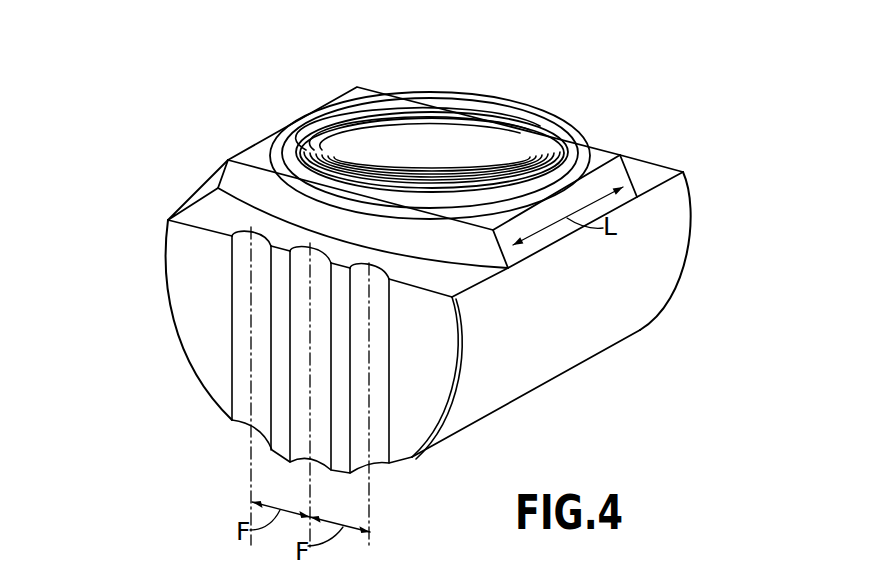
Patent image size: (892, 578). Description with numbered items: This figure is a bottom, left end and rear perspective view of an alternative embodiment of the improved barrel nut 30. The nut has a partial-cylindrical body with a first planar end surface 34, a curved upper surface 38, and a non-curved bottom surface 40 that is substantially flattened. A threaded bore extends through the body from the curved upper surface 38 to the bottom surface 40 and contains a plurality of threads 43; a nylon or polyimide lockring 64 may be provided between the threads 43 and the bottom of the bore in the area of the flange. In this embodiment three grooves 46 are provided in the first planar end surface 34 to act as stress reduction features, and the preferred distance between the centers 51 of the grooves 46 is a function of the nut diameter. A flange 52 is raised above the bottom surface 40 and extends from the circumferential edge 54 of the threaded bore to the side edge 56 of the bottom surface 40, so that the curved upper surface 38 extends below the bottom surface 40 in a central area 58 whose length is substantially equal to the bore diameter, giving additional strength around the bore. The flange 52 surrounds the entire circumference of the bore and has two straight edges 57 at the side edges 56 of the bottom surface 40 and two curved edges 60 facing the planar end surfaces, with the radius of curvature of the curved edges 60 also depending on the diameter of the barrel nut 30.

The barrel nut 30 is at (145, 137).
The first planar end surface 34 is at (413, 415).
The curved upper surface 38 is at (573, 337).
The bottom surface 40 is at (215, 200).
The threads 43 is at (368, 130).
The grooves 46 is at (360, 302).
The centers of the grooves 51 is at (370, 480).
The flange 52 is at (597, 157).
The circumferential edge 54 is at (560, 150).
The side edge 56 is at (176, 213).
The straight edges 57 is at (250, 142).
The central area 58 is at (637, 195).
The curved edges 60 is at (243, 183).
The lockring 64 is at (410, 107).